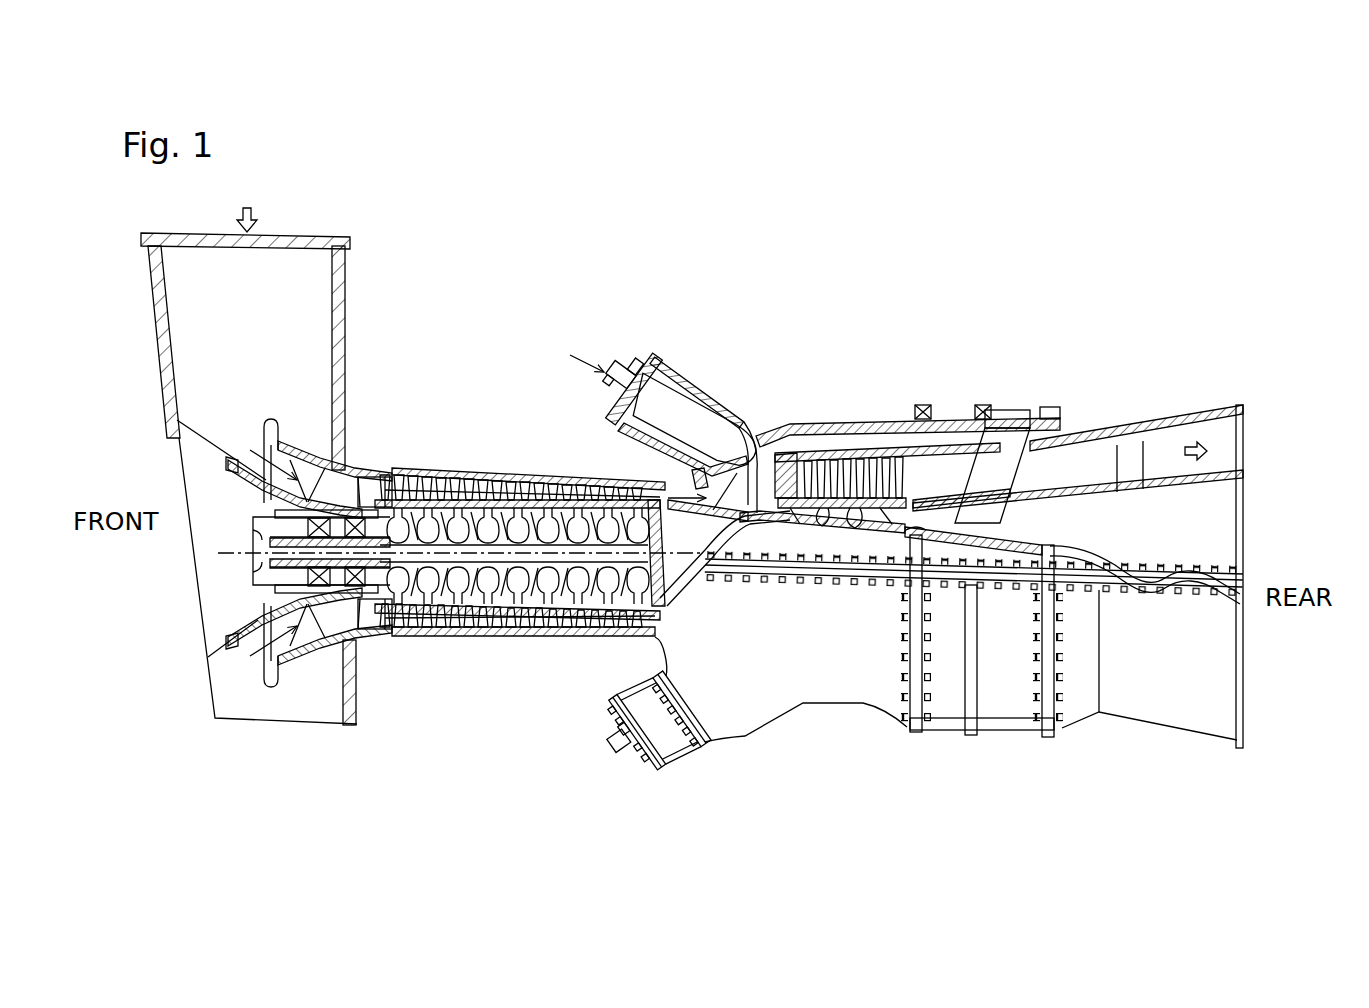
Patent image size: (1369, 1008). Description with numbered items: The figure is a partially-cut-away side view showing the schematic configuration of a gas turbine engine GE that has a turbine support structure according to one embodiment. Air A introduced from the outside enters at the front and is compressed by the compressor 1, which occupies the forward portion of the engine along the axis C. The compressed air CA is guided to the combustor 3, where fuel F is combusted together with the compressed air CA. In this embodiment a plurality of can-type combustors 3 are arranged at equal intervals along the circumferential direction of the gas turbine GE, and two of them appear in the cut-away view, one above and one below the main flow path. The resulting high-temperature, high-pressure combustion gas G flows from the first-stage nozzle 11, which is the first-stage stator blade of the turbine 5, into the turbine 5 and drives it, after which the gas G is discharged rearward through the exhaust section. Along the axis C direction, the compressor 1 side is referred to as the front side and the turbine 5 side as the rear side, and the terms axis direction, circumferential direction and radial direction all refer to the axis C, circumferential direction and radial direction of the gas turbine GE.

The compressor 1 is at (514, 647).
The combustor 3 is at (680, 364).
The turbine 5 is at (833, 452).
The first-stage nozzle 11 is at (780, 512).
The air A is at (256, 218).
The gas turbine engine GE is at (508, 346).
The fuel F is at (577, 352).
The combustion gas G is at (753, 470).
The compressed air CA is at (703, 478).
The axis C is at (236, 548).